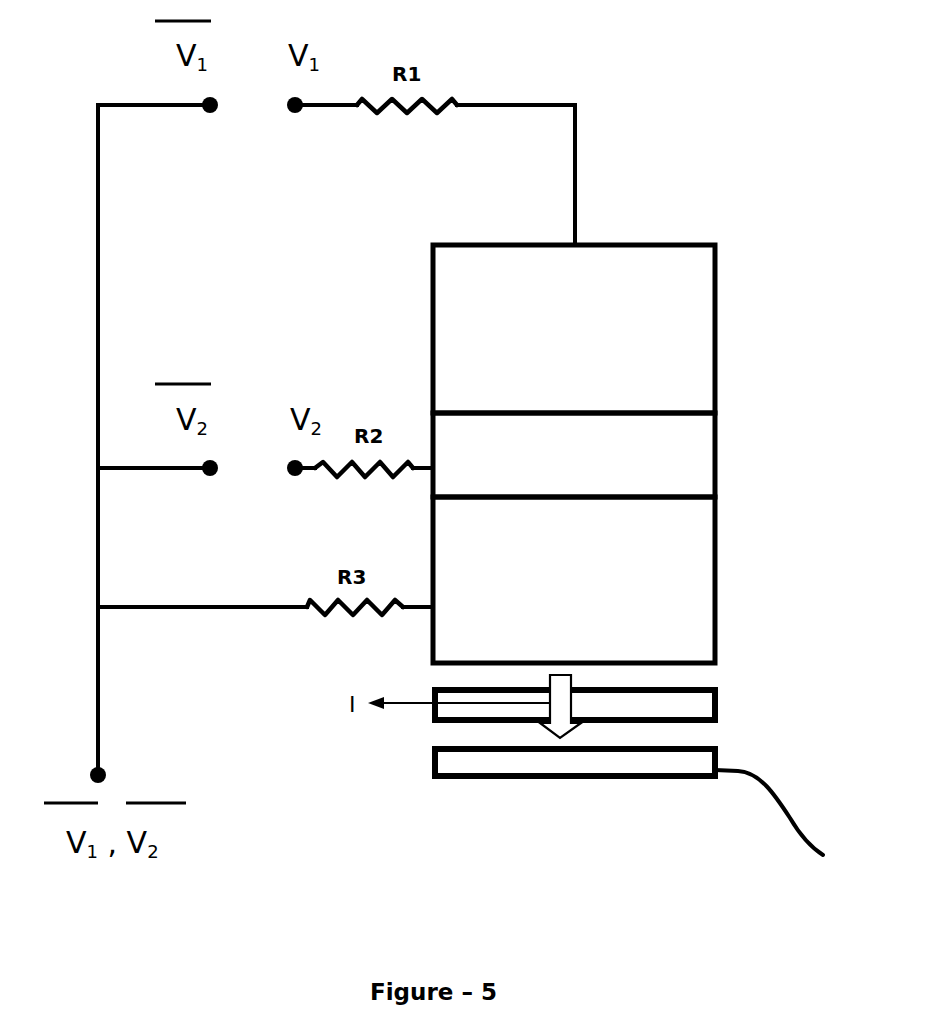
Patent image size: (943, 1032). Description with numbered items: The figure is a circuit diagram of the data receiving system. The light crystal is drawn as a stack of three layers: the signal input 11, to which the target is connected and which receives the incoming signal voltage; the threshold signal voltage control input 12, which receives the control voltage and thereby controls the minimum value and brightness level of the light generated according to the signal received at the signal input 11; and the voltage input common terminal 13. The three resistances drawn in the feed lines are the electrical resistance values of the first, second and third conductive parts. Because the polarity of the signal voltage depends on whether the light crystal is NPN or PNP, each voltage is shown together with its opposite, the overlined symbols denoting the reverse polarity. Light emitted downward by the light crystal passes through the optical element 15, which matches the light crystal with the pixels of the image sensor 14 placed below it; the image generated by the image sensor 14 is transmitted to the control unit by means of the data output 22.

The signal input 11 is at (663, 332).
The threshold signal voltage control input 12 is at (655, 445).
The voltage input common terminal 13 is at (663, 575).
The image sensor 14 is at (538, 763).
The optical element 15 is at (693, 703).
The data output 22 is at (787, 813).